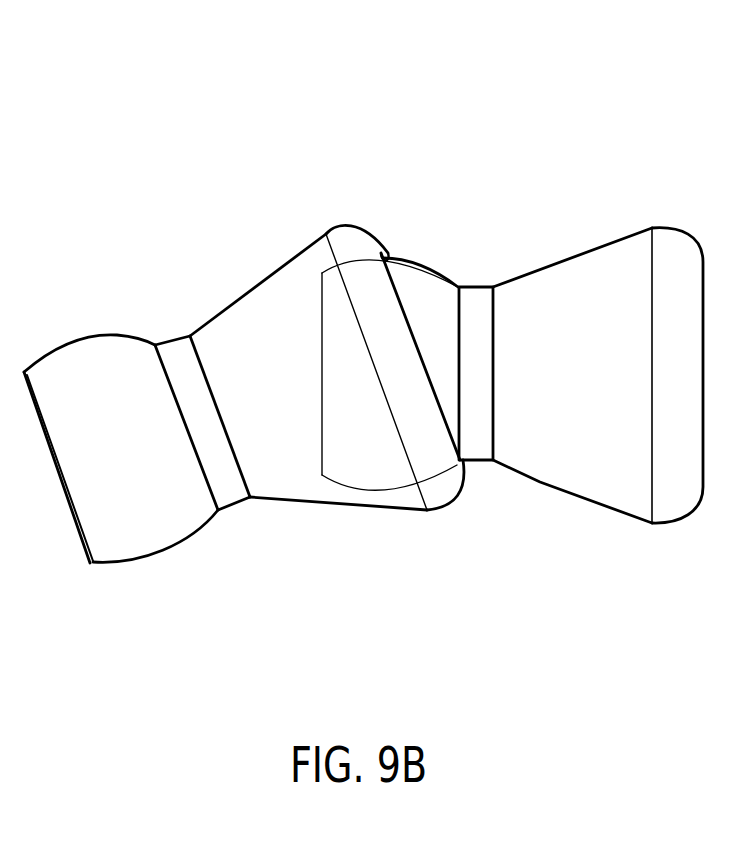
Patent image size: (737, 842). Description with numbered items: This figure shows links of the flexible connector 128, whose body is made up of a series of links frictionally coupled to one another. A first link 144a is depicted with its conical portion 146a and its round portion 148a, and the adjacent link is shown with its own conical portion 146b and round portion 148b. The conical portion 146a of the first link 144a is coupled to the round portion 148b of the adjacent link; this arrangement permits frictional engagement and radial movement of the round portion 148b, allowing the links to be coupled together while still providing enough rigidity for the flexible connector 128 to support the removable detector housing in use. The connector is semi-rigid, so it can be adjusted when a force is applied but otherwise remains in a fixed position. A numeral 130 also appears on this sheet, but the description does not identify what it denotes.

The flexible connector 128 is at (0, 80).
The connector 130 is at (8, 237).
The first link 144a is at (204, 165).
The conical portion 146a is at (238, 298).
The conical portion 146b is at (507, 108).
The round portion 148a is at (128, 337).
The round portion 148b is at (417, 262).